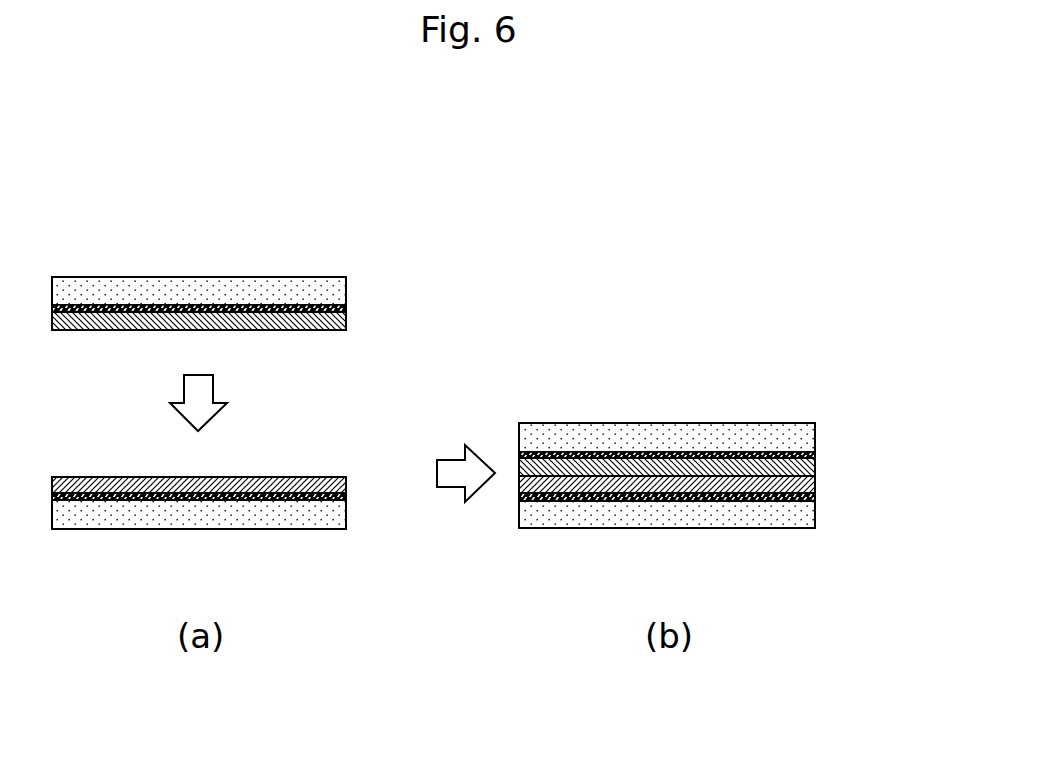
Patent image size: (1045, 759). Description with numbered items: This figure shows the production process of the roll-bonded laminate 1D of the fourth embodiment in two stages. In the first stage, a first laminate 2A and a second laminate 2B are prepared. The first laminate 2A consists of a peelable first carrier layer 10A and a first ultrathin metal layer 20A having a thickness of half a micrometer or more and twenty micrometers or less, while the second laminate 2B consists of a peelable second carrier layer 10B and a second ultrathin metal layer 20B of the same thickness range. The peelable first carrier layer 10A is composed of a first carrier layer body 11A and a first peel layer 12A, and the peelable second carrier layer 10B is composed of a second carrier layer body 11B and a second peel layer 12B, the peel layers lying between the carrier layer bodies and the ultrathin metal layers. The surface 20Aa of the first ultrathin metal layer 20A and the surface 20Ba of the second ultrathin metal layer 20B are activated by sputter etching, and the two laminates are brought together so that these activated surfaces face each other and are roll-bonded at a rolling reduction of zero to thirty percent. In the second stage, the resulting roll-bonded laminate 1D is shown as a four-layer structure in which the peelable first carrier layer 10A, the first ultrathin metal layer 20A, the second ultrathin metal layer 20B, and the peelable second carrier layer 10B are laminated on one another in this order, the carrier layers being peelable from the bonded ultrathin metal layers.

The first laminate 2A is at (351, 240).
The second laminate 2B is at (351, 552).
The roll-bonded laminate 1D is at (820, 385).
The peelable first carrier layer 10A is at (427, 277).
The peelable second carrier layer 10B is at (427, 495).
The first carrier layer body 11A is at (346, 289).
The second carrier layer body 11B is at (346, 512).
The first peel layer 12A is at (346, 309).
The second peel layer 12B is at (346, 497).
The first ultrathin metal layer 20A is at (346, 326).
The second ultrathin metal layer 20B is at (346, 484).
The surface of the first ultrathin metal layer 20Aa is at (108, 331).
The surface of the second ultrathin metal layer 20Ba is at (288, 477).